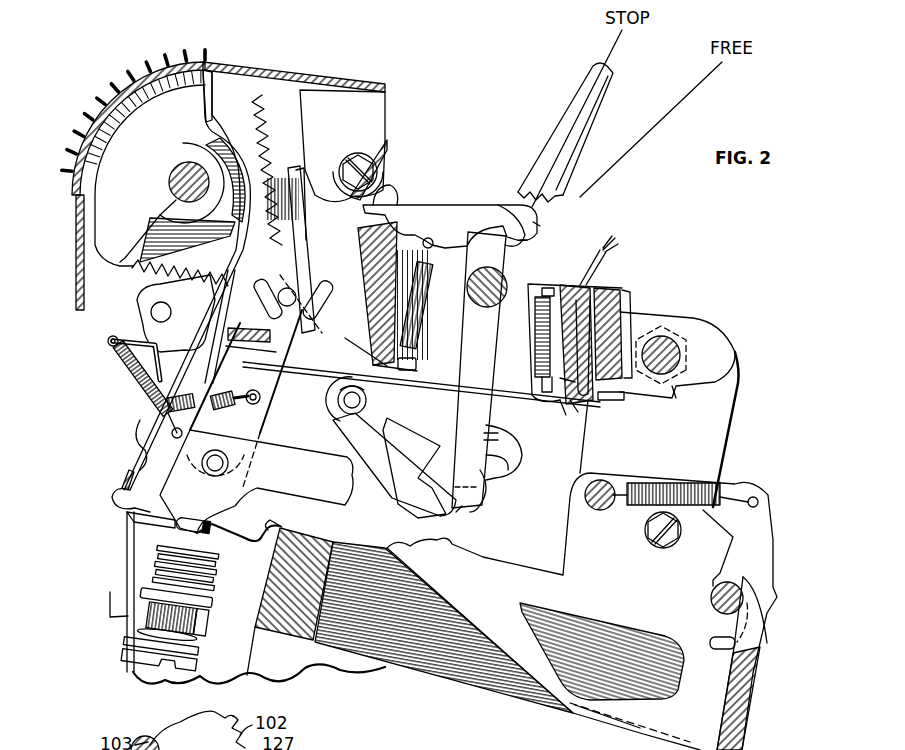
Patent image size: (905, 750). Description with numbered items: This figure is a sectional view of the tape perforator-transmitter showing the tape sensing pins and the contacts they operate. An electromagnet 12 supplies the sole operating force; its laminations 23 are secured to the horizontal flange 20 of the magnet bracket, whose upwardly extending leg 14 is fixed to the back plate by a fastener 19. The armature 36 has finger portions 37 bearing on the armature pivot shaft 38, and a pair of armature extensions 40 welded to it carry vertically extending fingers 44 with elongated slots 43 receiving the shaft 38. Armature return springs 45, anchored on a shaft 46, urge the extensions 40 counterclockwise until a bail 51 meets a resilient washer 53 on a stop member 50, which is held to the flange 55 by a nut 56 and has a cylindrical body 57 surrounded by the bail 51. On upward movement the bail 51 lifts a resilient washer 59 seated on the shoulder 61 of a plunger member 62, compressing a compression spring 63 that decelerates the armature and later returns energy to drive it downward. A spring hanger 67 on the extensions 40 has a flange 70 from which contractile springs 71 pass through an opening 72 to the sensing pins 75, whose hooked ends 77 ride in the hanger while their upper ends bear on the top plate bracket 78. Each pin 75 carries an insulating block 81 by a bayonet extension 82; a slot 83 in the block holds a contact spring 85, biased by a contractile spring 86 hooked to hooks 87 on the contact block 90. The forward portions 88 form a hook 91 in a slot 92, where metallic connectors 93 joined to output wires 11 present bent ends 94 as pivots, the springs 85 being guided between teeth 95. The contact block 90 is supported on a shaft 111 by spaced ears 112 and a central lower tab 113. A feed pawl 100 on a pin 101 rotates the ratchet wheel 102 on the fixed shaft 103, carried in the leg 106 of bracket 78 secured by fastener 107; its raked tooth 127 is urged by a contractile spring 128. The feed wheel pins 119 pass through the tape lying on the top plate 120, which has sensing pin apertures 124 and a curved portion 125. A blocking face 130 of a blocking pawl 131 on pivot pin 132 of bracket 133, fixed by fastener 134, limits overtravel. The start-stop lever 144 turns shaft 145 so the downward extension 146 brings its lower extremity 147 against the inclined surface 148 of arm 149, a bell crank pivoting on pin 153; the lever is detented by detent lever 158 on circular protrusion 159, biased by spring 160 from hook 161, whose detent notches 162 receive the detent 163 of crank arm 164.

The parallel output wires 11 is at (605, 258).
The electromagnet 12 is at (76, 285).
The upwardly extending leg 14 is at (572, 535).
The fastener 19 is at (648, 536).
The horizontal flange 20 is at (320, 535).
The laminations 23 is at (422, 672).
The armature 36 is at (745, 720).
The finger portions 37 is at (764, 645).
The armature pivot shaft 38 is at (713, 595).
The armature extensions 40 is at (590, 728).
The elongated slots 43 is at (742, 575).
The vertically extending fingers 44 is at (757, 492).
The armature return springs 45 is at (678, 482).
The shaft 46 is at (590, 496).
The stop member 50 is at (150, 650).
The bail 51 is at (108, 600).
The resilient washer 53 is at (147, 633).
The flange 55 is at (137, 527).
The nut 56 is at (195, 519).
The cylindrical body 57 is at (127, 620).
The resilient washer 59 is at (145, 592).
The shoulder 61 is at (212, 600).
The plunger member 62 is at (208, 574).
The compression spring 63 is at (150, 556).
The spring hanger 67 is at (138, 335).
The flange 70 is at (108, 341).
The contractile springs 71 is at (122, 368).
The opening 72 is at (140, 432).
The sensing pins 75 is at (205, 125).
The hooked ends 77 is at (120, 485).
The top plate bracket 78 is at (385, 90).
The insulating blocks 81 is at (260, 393).
The bayonet extensions 82 is at (228, 336).
The slot 83 is at (262, 402).
The contact springs 85 is at (410, 390).
The contractile springs 86 is at (530, 375).
The hooks 87 is at (565, 290).
The forward portions 88 is at (552, 400).
The contact block 90 is at (625, 283).
The hook 91 is at (583, 400).
The slot 92 is at (605, 399).
The metallic connectors 93 is at (630, 305).
The bent ends 94 is at (578, 400).
The teeth 95 is at (570, 405).
The feed pawl 100 is at (305, 232).
The pin 101 is at (228, 465).
The ratchet wheel 102 is at (240, 117).
The fixed shaft 103 is at (170, 178).
The leg 106 is at (386, 112).
The fastener 107 is at (357, 160).
The shaft 111 is at (690, 364).
The spaced ears 112 is at (690, 326).
The central lower tab 113 is at (672, 392).
The feed wheel pins 119 is at (95, 115).
The top plate 120 is at (283, 77).
The sensing pin apertures 124 is at (210, 66).
The curved portion 125 is at (115, 90).
The raked tooth 127 is at (298, 175).
The contractile spring 128 is at (165, 405).
The blocking face 130 is at (303, 250).
The blocking pawl 131 is at (313, 280).
The pivot pin 132 is at (350, 404).
The bracket 133 is at (440, 445).
The fastener 134 is at (505, 450).
The start-stop lever 144 is at (590, 85).
The shaft 145 is at (510, 285).
The downward extension 146 is at (480, 480).
The lower extremity 147 is at (475, 490).
The inclined surface 148 is at (460, 502).
The arm 149 is at (400, 495).
The pivot pin 153 is at (152, 303).
The detent lever 158 is at (450, 205).
The circular protrusion 159 is at (405, 185).
The spring 160 is at (432, 302).
The hook 161 is at (416, 364).
The detent notches 162 is at (503, 207).
The detent 163 is at (533, 223).
The crank arm 164 is at (527, 240).